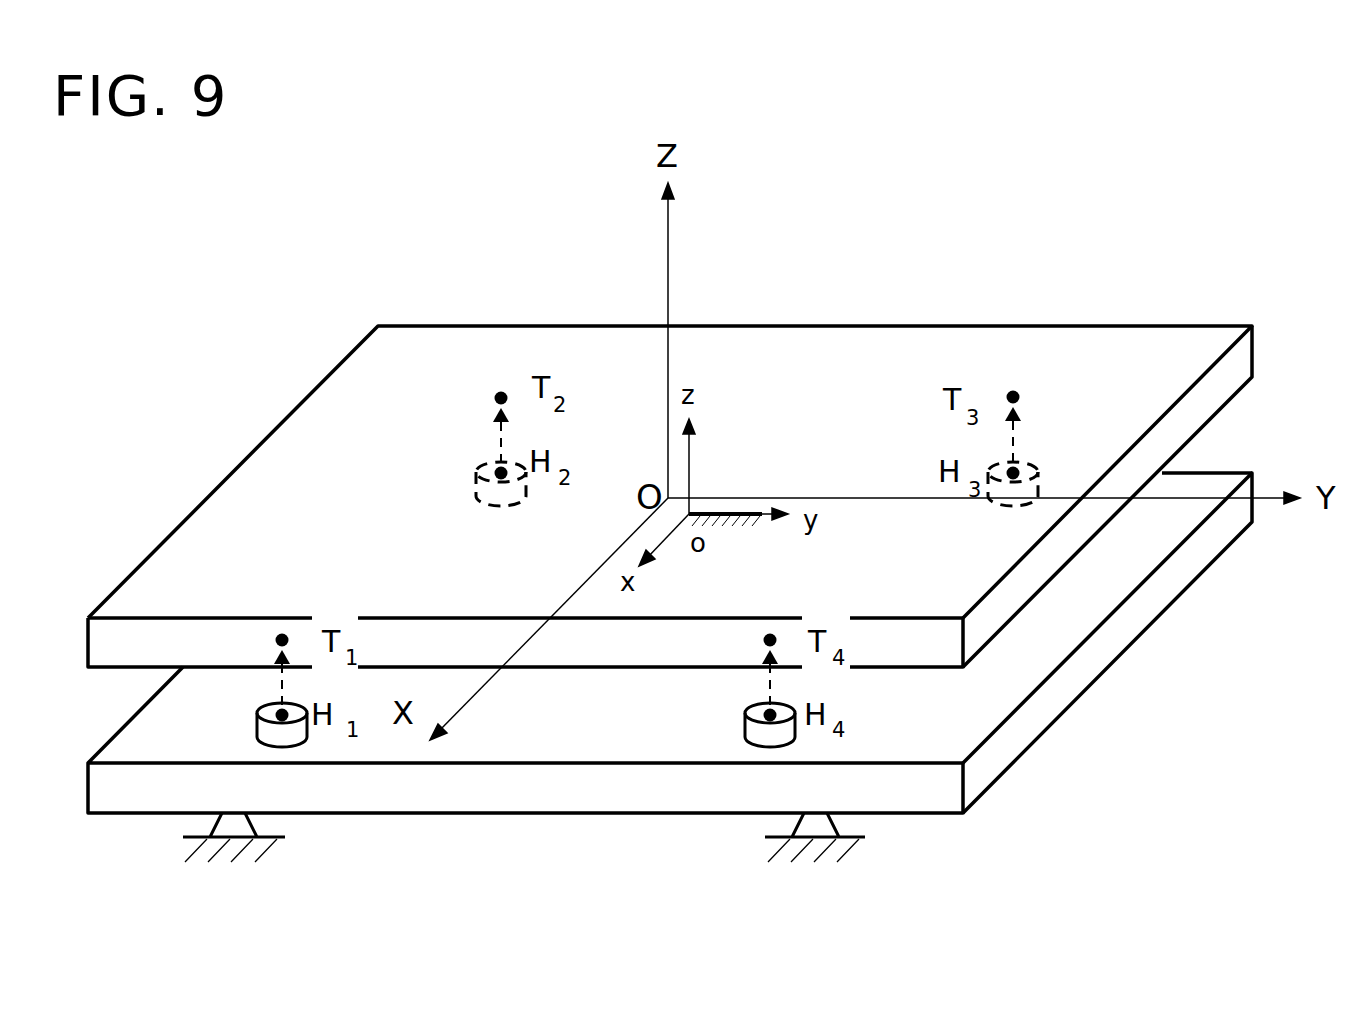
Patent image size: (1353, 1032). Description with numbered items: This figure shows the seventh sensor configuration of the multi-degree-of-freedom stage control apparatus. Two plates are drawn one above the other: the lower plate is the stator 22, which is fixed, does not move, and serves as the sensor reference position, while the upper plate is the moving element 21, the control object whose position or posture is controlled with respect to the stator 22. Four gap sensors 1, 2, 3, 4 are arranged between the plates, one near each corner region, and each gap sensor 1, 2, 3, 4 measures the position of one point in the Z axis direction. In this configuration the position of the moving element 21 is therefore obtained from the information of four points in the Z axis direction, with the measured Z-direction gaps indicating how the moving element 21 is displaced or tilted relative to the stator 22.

The gap sensor 1 is at (259, 711).
The gap sensor 2 is at (482, 494).
The gap sensor 3 is at (1040, 465).
The gap sensor 4 is at (747, 711).
The moving element 21 is at (1188, 423).
The stator 22 is at (1083, 671).